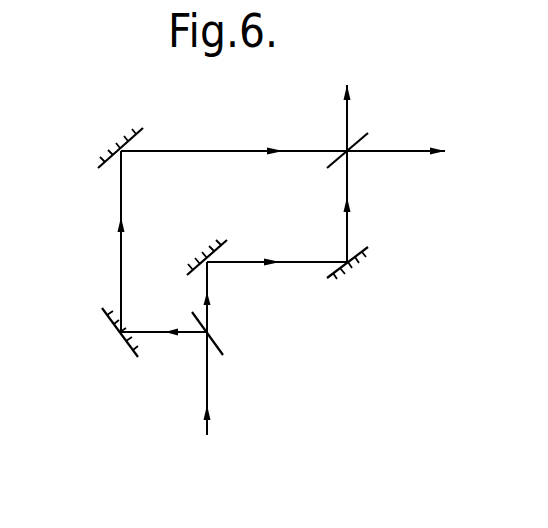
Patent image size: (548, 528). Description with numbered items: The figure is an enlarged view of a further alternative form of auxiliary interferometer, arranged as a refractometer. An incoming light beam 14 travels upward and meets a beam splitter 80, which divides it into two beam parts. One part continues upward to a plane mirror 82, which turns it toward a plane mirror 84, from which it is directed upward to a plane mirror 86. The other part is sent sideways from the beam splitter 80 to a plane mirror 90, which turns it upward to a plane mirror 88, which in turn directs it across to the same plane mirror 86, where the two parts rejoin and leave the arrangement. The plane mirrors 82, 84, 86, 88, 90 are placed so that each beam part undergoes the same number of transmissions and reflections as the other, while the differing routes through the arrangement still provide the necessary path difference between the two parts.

The light beam 14 is at (209, 430).
The beam splitter 80 is at (222, 346).
The plane mirror 82 is at (205, 253).
The plane mirror 84 is at (350, 265).
The plane mirror 86 is at (355, 132).
The plane mirror 88 is at (120, 150).
The plane mirror 90 is at (117, 332).